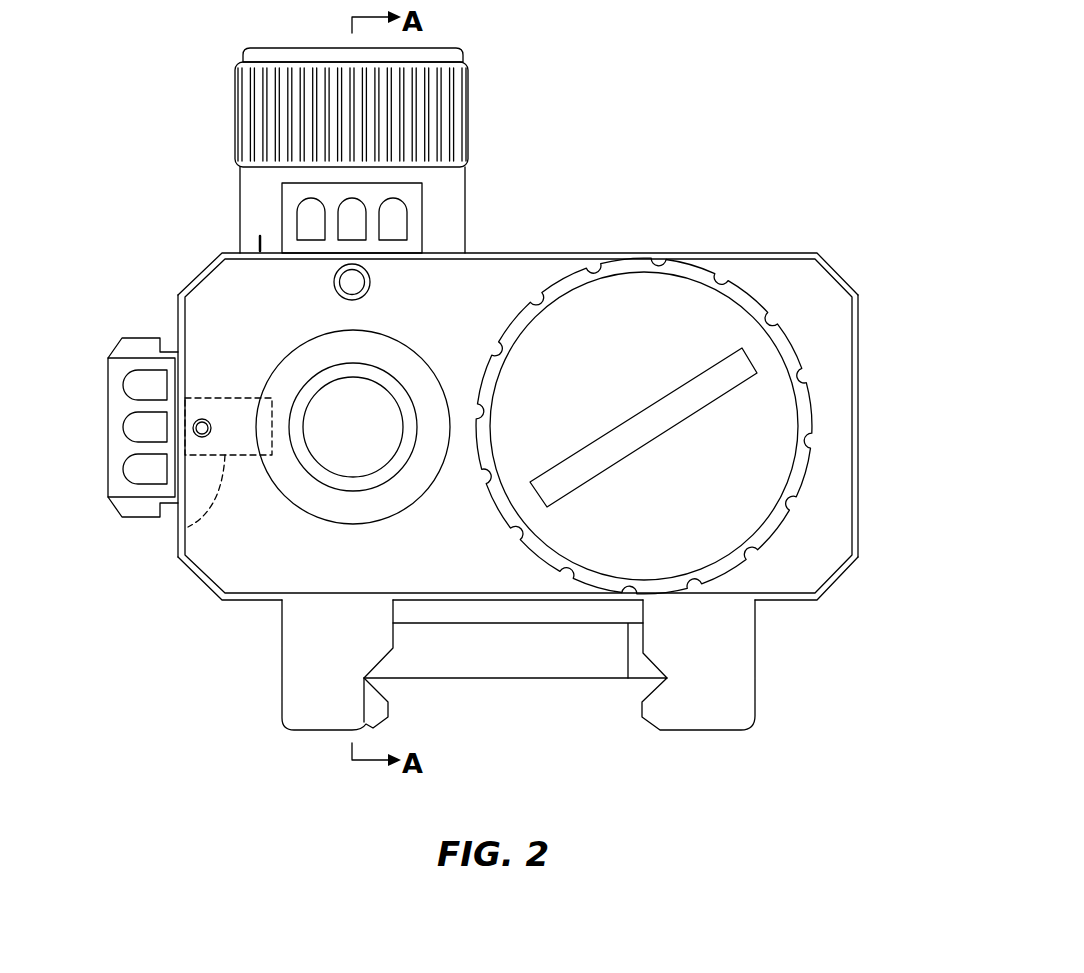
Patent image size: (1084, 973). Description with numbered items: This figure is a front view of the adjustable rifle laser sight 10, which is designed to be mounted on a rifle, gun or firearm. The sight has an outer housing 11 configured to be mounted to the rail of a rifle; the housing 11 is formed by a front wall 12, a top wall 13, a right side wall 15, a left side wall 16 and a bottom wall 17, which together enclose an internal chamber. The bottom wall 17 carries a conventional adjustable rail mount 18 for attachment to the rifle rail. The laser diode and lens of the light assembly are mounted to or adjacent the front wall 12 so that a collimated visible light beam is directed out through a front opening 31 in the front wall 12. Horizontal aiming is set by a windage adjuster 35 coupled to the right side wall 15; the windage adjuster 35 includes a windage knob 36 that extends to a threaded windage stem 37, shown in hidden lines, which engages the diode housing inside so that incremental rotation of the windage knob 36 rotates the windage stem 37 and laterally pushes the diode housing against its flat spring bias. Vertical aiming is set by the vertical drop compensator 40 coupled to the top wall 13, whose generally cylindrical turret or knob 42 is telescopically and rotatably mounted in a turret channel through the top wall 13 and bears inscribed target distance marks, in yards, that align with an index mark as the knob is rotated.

The adjustable rifle laser sight 10 is at (669, 88).
The outer housing 11 is at (752, 278).
The front wall 12 is at (812, 305).
The top wall 13 is at (538, 253).
The right side wall 15 is at (178, 548).
The left side wall 16 is at (861, 362).
The bottom wall 17 is at (779, 602).
The adjustable rail mount 18 is at (728, 648).
The front opening 31 is at (332, 452).
The windage adjuster 35 is at (168, 352).
The windage knob 36 is at (133, 340).
The threaded windage stem 37 is at (186, 528).
The vertical compensator 40 is at (270, 48).
The turret 42 is at (240, 200).